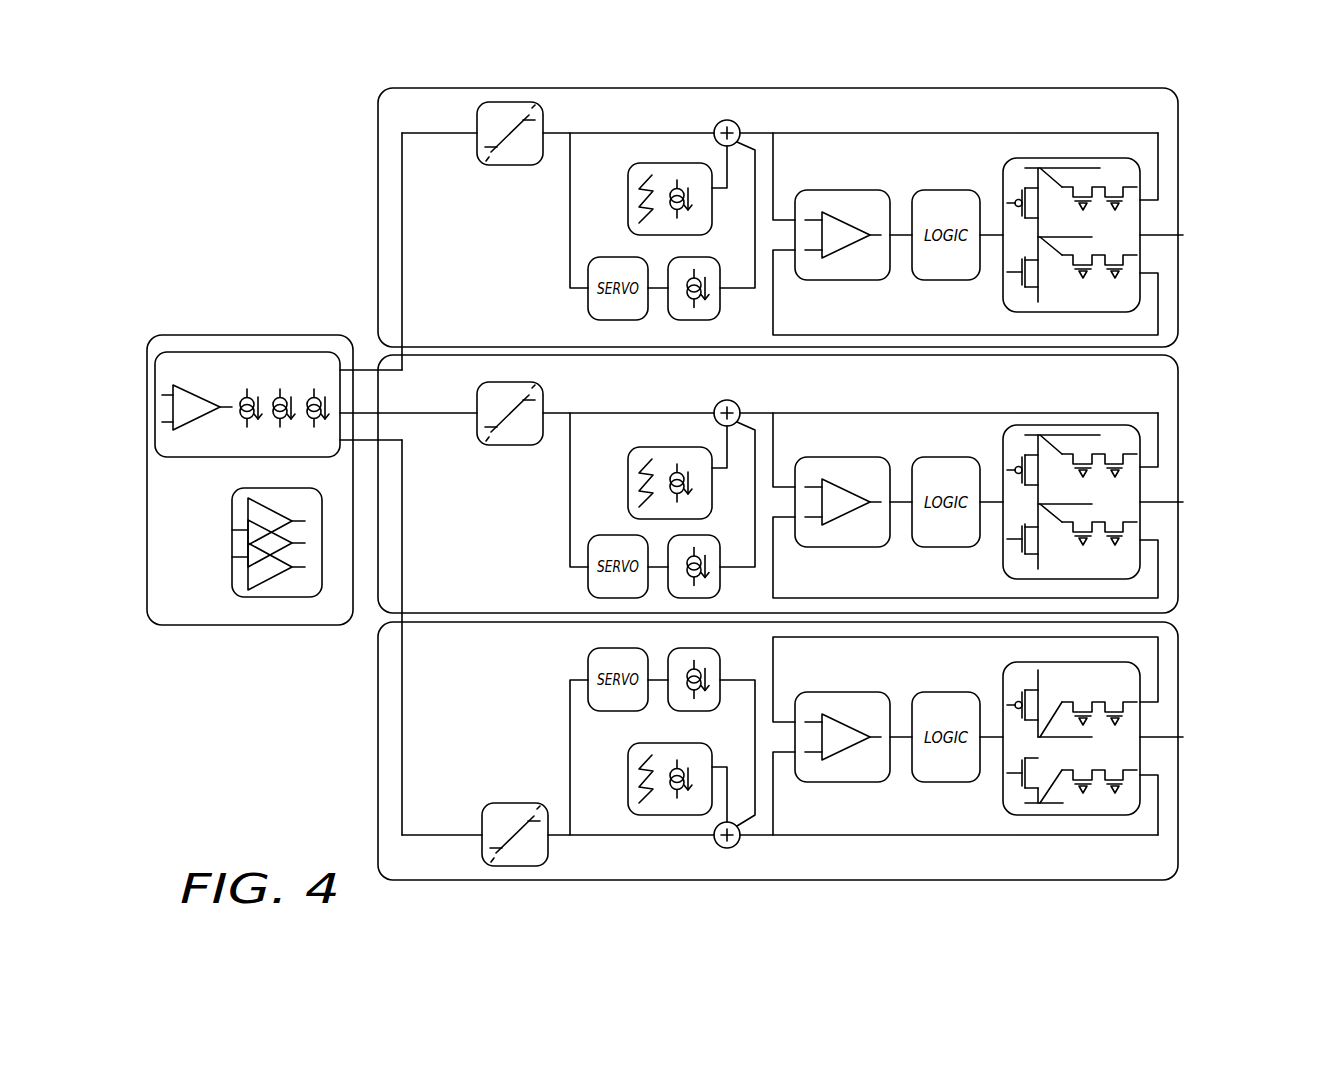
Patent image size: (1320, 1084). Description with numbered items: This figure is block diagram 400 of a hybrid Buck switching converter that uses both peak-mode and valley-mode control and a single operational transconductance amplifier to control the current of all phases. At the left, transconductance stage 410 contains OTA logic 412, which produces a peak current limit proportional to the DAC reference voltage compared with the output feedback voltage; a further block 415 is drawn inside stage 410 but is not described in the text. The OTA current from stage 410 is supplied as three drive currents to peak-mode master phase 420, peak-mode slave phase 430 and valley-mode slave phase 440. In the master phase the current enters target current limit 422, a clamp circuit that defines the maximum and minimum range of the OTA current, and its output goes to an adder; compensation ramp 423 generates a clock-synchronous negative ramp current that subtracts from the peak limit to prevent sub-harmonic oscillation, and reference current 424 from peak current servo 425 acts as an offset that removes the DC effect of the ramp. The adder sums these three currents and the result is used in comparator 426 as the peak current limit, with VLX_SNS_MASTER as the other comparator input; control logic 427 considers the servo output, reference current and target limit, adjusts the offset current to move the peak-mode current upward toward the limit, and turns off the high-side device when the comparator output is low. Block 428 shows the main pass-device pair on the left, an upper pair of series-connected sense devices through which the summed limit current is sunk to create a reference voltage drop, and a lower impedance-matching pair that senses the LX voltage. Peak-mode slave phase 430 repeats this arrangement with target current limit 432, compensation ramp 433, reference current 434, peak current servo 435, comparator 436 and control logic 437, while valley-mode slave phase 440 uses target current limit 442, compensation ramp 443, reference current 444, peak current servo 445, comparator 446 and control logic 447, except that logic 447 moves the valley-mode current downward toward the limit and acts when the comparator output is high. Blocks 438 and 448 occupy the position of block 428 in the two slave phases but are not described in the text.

The block diagram 400 is at (248, 168).
The transconductance (gm) stage 410 is at (201, 334).
The OTA logic 412 is at (209, 460).
The buffer amplifiers 415 is at (230, 573).
The peak-mode master phase 420 is at (1178, 160).
The target current limit (clamp circuit) 422 is at (508, 168).
The compensation ramp 423 is at (710, 236).
The reference current 424 is at (710, 321).
The peak current servo 425 is at (590, 308).
The comparator 426 is at (846, 190).
The control logic 427 is at (950, 281).
The pass-device and sense-device block 428 is at (1003, 196).
The peak-mode slave phase 430 is at (1178, 424).
The target current limit 432 is at (515, 448).
The compensation ramp 433 is at (710, 502).
The reference current 434 is at (718, 578).
The peak current servo 435 is at (590, 584).
The comparator 436 is at (846, 457).
The control logic 437 is at (950, 548).
The intermediate power switch stage 438 is at (1003, 462).
The valley-mode slave phase 440 is at (1178, 691).
The target current limit 442 is at (482, 838).
The compensation ramp 443 is at (720, 660).
The reference current 444 is at (700, 744).
The peak current servo 445 is at (590, 660).
The comparator 446 is at (818, 783).
The control logic 447 is at (958, 783).
The slave power switch stage 448 is at (1003, 697).